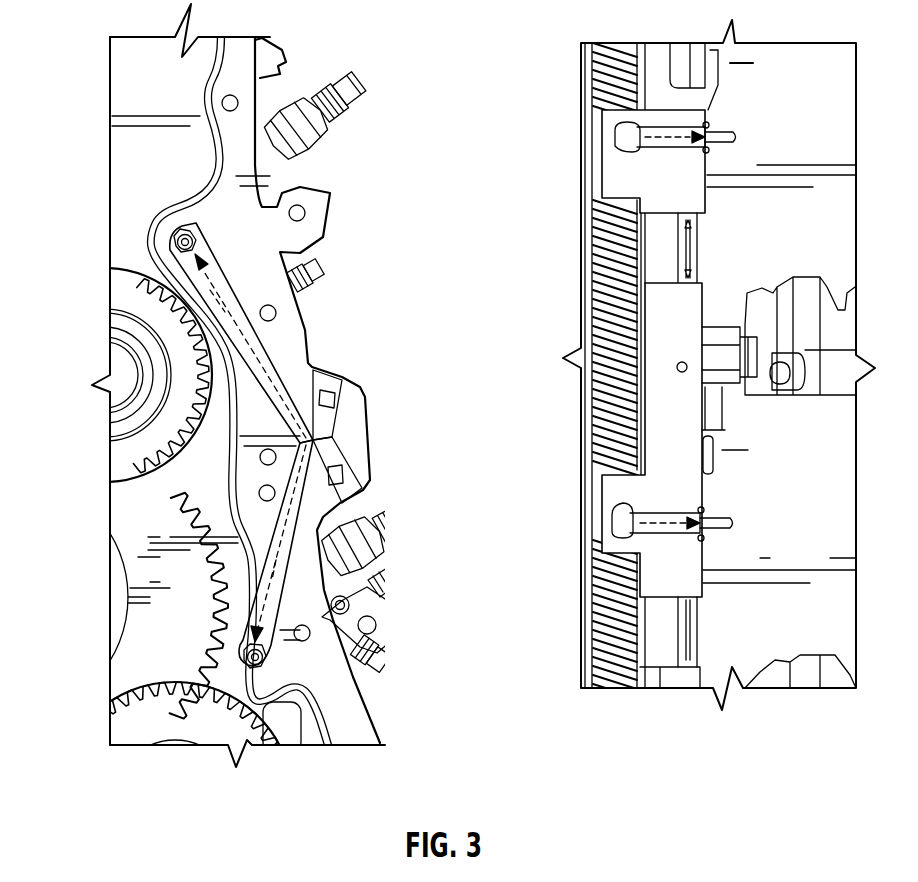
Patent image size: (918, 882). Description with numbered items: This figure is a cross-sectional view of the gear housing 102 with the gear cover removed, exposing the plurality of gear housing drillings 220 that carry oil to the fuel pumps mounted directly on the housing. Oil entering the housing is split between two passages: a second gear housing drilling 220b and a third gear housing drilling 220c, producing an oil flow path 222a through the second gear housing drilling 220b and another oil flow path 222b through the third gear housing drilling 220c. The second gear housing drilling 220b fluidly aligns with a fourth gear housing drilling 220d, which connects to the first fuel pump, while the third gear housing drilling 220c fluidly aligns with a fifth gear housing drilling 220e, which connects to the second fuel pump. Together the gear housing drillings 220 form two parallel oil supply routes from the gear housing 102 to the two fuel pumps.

The gear housing 102 is at (145, 185).
The gear housing drillings 220 is at (92, 349).
The second gear housing drilling 220b is at (205, 282).
The third gear housing drilling 220c is at (262, 580).
The fourth gear housing drilling 220d is at (652, 140).
The fifth gear housing drilling 220e is at (648, 530).
The oil flow path 222a is at (262, 356).
The oil flow path 222b is at (272, 550).